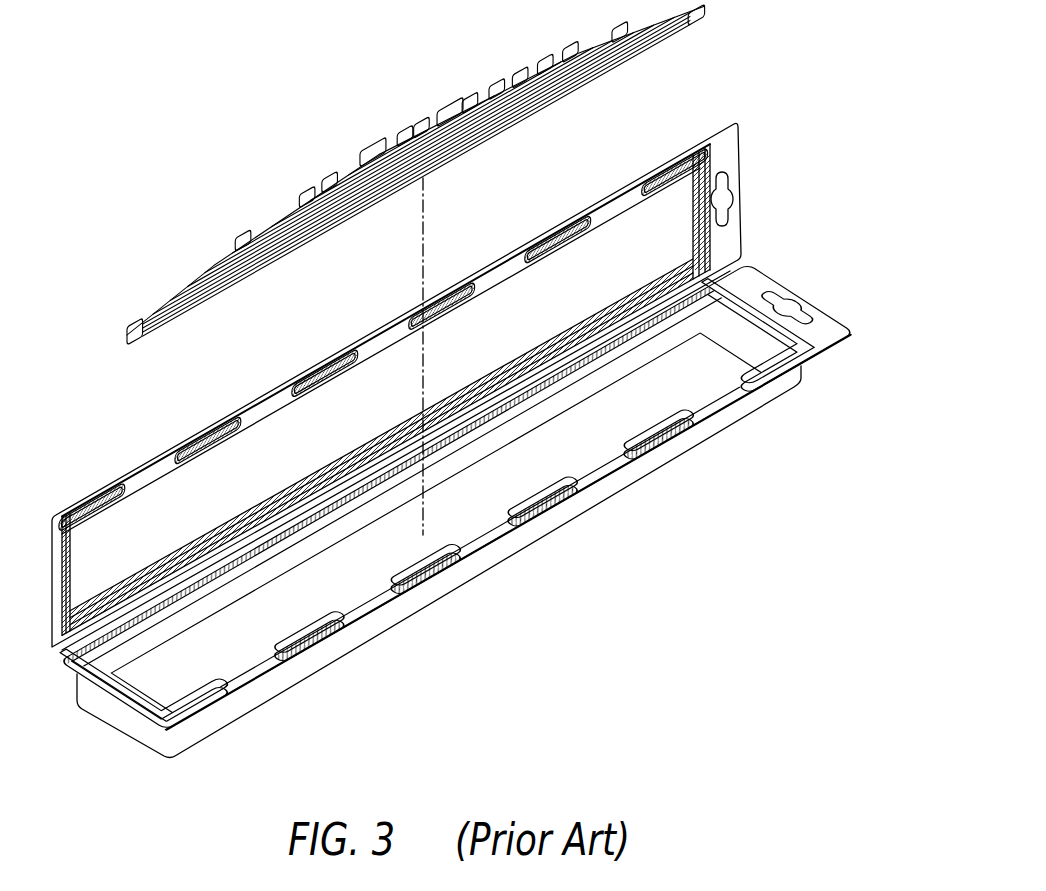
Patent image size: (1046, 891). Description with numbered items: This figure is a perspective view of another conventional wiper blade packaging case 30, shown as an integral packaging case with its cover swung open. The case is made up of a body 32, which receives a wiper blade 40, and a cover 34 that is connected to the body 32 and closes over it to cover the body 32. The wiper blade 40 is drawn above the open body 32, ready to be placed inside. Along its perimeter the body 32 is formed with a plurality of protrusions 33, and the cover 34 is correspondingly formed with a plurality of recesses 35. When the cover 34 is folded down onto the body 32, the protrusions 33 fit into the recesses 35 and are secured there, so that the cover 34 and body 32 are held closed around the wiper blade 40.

The wiper blade packaging case 30 is at (458, 440).
The body 32 is at (453, 509).
The protrusions 33 is at (563, 507).
The cover 34 is at (396, 386).
The recesses 35 is at (549, 237).
The wiper blade 40 is at (382, 108).